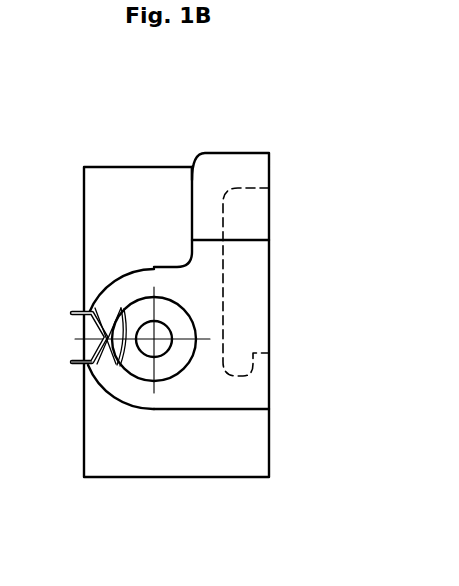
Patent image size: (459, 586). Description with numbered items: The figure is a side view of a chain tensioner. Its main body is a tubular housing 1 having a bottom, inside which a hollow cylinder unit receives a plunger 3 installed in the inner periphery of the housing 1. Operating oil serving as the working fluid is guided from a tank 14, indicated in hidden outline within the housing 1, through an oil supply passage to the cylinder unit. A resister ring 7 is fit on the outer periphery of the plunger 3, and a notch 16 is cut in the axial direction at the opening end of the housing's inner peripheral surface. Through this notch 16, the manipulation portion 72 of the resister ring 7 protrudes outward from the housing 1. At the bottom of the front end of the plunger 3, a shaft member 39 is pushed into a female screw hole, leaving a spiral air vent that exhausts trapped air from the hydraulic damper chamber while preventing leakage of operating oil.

The housing 1 is at (85, 442).
The plunger 3 is at (188, 367).
The resister ring 7 is at (70, 370).
The tank 14 is at (269, 353).
The notch 16 is at (110, 322).
The shaft member 39 is at (159, 346).
The manipulation portion 72 is at (97, 330).